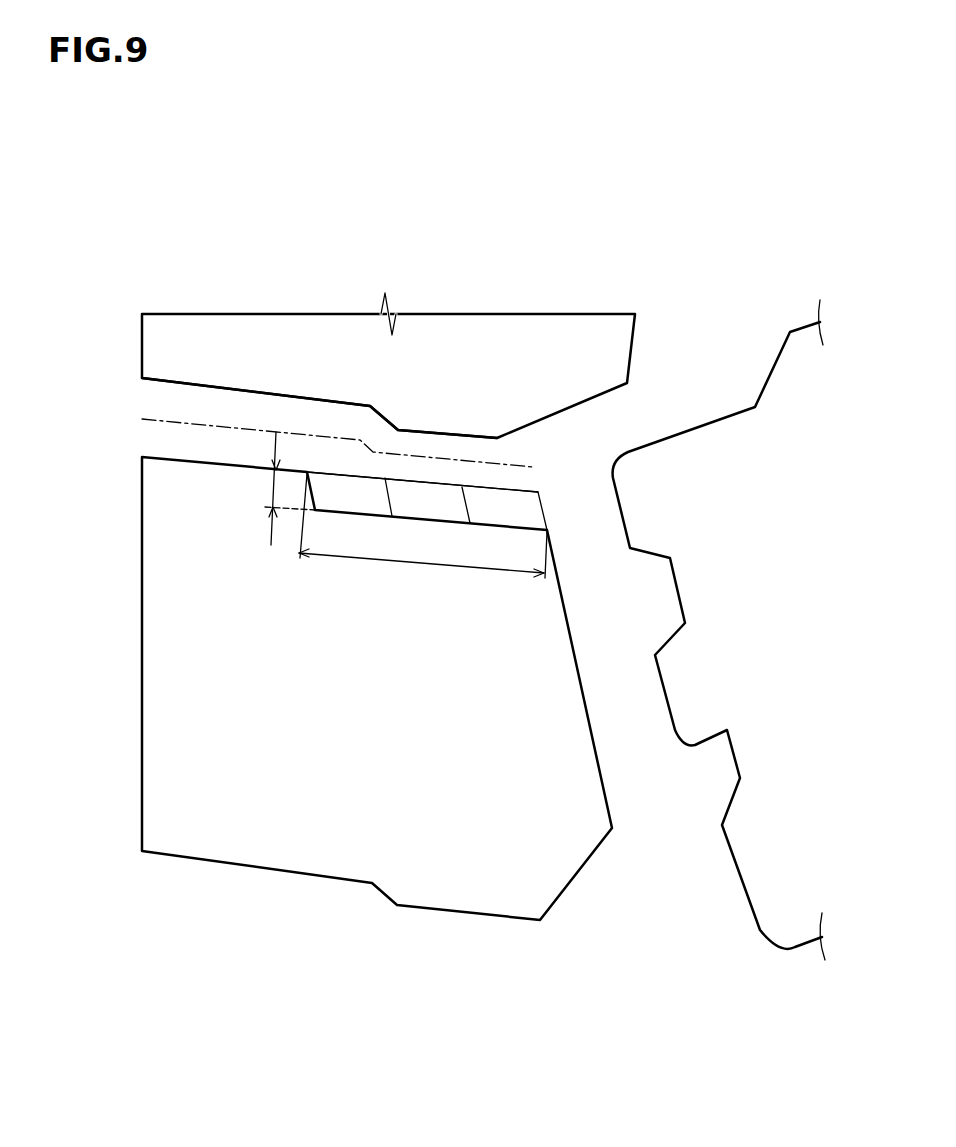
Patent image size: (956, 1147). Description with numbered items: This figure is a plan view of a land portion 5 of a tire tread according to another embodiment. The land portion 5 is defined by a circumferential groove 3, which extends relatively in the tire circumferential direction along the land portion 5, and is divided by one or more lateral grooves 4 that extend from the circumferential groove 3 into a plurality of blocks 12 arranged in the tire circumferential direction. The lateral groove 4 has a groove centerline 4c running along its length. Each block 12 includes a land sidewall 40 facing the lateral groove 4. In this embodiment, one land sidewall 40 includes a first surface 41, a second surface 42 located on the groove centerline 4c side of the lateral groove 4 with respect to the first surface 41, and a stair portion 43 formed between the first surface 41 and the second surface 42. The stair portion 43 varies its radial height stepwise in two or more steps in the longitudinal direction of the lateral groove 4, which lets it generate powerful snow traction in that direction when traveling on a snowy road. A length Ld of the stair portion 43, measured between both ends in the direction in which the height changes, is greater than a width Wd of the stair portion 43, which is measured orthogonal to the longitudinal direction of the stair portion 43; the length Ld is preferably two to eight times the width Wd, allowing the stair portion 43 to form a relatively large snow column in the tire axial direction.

The block 12 is at (288, 352).
The lateral groove 4 is at (195, 412).
The groove centerline 4c is at (230, 428).
The land portion 5 is at (373, 934).
The land sidewall 40 is at (227, 463).
The first surface 41 is at (480, 523).
The second surface 42 is at (527, 490).
The stair portion 43 is at (500, 506).
The width of the stair portion Wd is at (275, 488).
The length of the stair portion Ld is at (405, 560).
The circumferential groove 3 is at (637, 715).